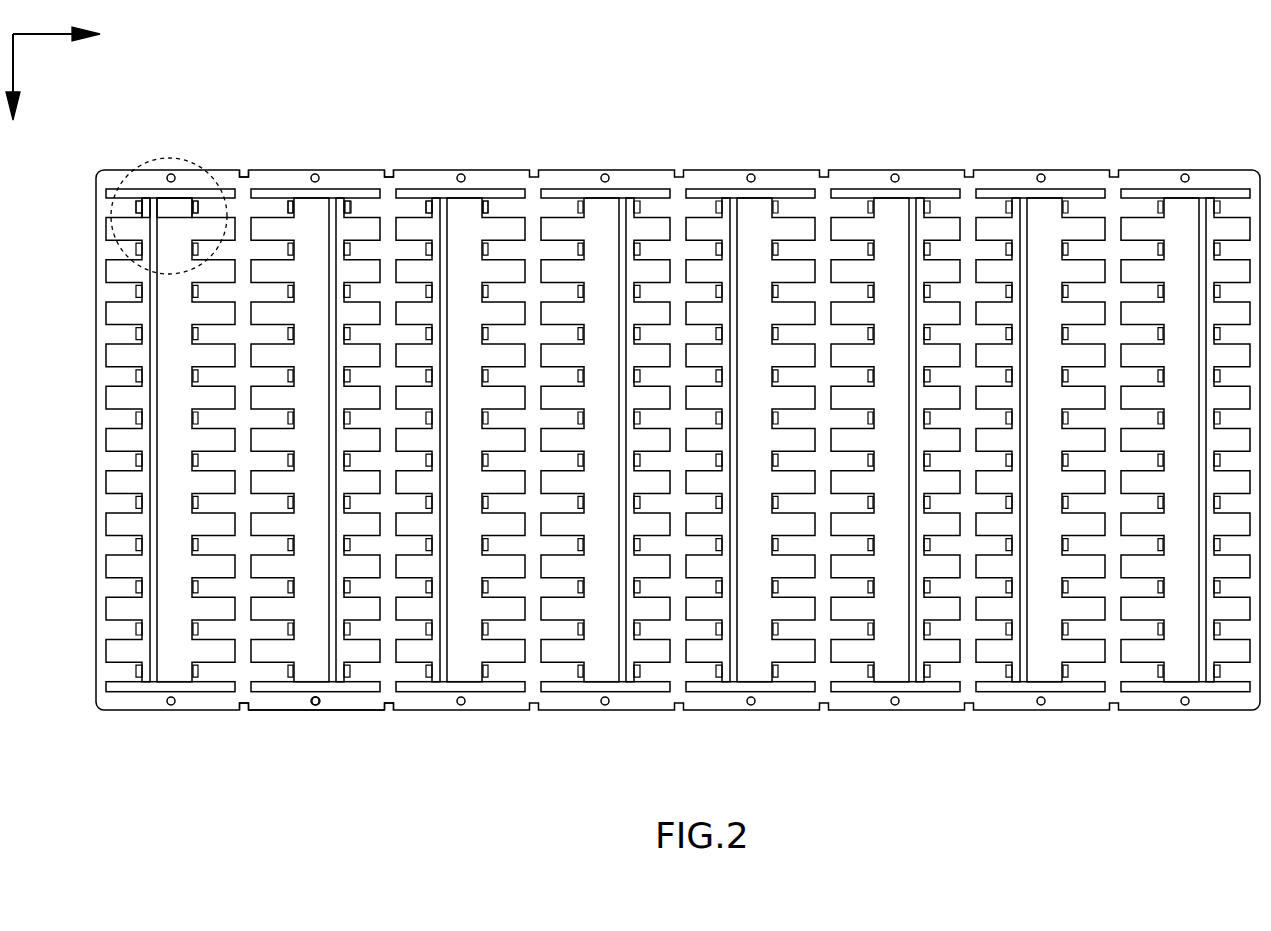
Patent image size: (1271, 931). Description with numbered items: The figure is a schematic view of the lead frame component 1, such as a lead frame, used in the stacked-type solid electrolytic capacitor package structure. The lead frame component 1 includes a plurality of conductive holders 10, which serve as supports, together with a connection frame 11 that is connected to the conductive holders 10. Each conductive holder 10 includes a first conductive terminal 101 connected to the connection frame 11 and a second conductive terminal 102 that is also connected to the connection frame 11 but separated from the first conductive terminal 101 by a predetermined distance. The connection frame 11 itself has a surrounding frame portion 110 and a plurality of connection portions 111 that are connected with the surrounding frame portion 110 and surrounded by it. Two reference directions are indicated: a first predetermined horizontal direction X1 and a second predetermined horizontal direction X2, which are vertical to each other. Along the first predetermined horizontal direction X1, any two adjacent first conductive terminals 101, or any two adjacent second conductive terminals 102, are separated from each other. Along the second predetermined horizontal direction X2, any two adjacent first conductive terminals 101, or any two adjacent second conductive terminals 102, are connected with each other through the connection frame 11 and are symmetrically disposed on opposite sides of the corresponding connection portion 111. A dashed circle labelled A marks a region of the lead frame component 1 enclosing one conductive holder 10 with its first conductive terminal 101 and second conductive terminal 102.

The lead frame component 1 is at (88, 166).
The conductive holder 10 is at (205, 112).
The first conductive terminal 101 is at (125, 205).
The second conductive terminal 102 is at (178, 207).
The connection frame 11 is at (395, 765).
The surrounding frame portion 110 is at (330, 699).
The connection portion 111 is at (243, 648).
The enlarged region A is at (221, 178).
The first predetermined horizontal direction X1 is at (16, 91).
The second predetermined horizontal direction X2 is at (73, 35).